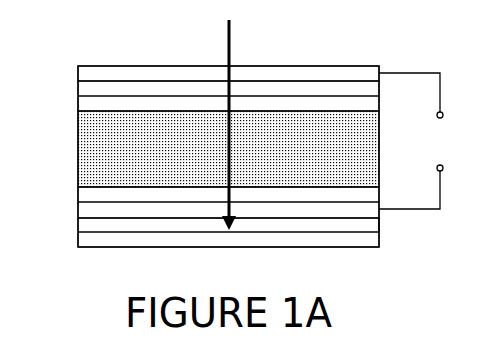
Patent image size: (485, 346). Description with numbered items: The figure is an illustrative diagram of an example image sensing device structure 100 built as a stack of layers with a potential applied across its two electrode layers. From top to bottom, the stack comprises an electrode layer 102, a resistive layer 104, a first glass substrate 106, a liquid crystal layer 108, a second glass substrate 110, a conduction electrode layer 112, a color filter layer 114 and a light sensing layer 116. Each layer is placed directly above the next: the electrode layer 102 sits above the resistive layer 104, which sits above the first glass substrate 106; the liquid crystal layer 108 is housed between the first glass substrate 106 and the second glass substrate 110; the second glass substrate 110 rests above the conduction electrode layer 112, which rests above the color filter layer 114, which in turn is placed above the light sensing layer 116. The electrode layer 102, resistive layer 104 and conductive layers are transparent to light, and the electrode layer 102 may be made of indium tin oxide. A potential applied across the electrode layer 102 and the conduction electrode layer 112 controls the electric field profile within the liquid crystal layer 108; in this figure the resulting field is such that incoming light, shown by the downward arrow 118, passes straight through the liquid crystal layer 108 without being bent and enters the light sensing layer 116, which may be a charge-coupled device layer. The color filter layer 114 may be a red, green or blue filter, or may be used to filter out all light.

The image sensing device structure 100 is at (334, 24).
The electrode layer 102 is at (78, 72).
The resistive layer 104 is at (379, 88).
The first glass substrate 106 is at (78, 108).
The liquid crystal layer 108 is at (78, 150).
The second glass substrate 110 is at (379, 194).
The conduction electrode layer 112 is at (78, 205).
The color filter layer 114 is at (379, 217).
The light sensing layer 116 is at (78, 243).
The incident light 118 is at (229, 43).